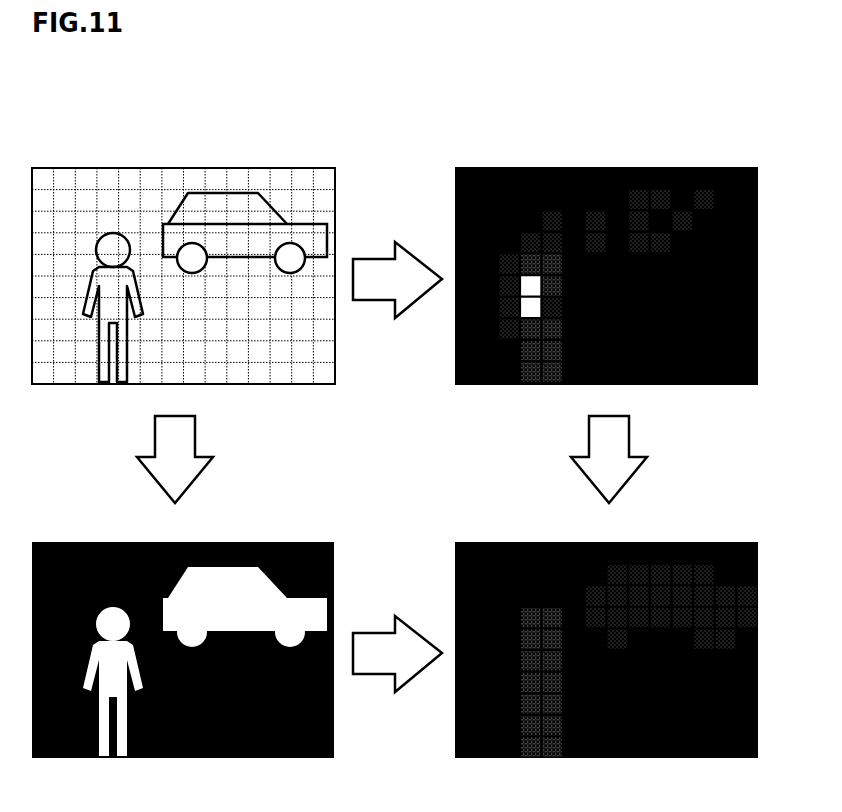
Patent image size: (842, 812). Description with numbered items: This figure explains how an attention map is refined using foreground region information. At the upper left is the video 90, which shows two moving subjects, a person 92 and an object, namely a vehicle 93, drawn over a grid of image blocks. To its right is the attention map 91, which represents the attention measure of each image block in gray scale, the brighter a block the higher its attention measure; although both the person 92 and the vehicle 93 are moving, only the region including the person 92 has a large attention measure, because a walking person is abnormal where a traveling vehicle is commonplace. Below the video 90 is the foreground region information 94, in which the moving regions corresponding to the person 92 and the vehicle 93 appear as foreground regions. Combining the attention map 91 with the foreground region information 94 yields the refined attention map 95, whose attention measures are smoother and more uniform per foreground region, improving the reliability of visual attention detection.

The video 90 is at (92, 137).
The attention map 91 is at (496, 137).
The person 92 is at (102, 360).
The object (vehicle) 93 is at (248, 202).
The foreground region information 94 is at (92, 530).
The refined attention map 95 is at (495, 530).